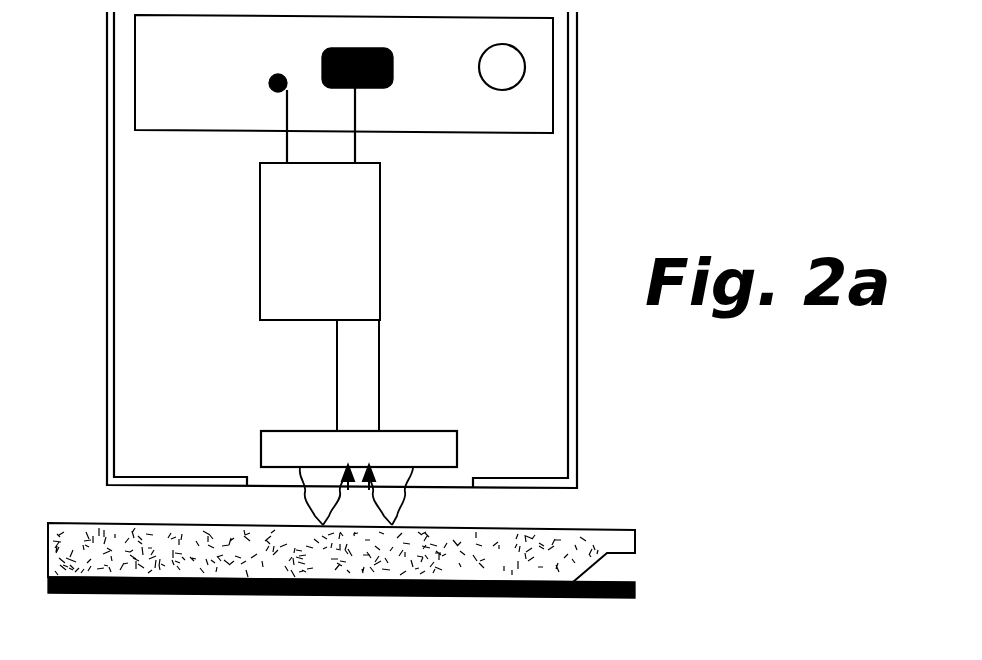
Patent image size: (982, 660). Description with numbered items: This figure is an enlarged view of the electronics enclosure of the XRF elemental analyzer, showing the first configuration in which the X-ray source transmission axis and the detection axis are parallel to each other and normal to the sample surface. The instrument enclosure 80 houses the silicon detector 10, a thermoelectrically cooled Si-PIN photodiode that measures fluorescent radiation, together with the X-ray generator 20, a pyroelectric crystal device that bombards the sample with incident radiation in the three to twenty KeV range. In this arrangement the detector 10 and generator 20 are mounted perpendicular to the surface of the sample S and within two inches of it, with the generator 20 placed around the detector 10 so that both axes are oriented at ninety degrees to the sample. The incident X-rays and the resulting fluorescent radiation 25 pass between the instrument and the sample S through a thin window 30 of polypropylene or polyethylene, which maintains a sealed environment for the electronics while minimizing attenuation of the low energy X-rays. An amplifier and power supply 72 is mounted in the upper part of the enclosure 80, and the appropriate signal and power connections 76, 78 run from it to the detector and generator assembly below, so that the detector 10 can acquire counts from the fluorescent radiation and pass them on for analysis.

The silicon detector 10 is at (312, 258).
The X-ray generator 20 is at (292, 430).
The incident and fluorescent radiation 25 is at (305, 500).
The thin window 30 is at (293, 487).
The amplifier and power supply 72 is at (192, 78).
The signal and power connection 76 is at (358, 143).
The signal and power connection 78 is at (285, 143).
The instrument enclosure 80 is at (578, 177).
The substrate S is at (535, 545).